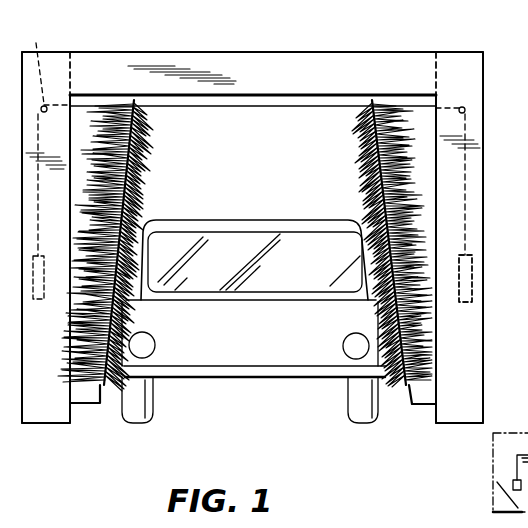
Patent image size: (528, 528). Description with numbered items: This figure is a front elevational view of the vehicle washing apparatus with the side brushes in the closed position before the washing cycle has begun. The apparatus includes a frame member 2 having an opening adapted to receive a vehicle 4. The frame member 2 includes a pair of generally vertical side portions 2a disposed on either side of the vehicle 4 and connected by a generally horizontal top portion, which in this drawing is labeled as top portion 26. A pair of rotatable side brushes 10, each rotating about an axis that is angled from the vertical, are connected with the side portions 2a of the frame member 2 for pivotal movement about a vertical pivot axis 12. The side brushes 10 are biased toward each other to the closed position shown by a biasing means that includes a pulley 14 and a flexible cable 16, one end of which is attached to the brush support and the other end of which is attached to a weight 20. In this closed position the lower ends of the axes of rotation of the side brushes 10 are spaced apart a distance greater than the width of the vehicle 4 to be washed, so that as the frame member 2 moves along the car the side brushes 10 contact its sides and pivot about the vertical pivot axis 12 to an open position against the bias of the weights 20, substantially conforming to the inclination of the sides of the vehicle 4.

The frame member 2 is at (236, 53).
The side portions 2a is at (52, 418).
The vehicle 4 is at (268, 347).
The side brushes 10 is at (151, 160).
The vertical pivot axis 12 is at (70, 41).
The pulley 14 is at (512, 485).
The flexible cable 16 is at (470, 185).
The weight 20 is at (471, 283).
The cross beam / lintel 26 is at (148, 62).